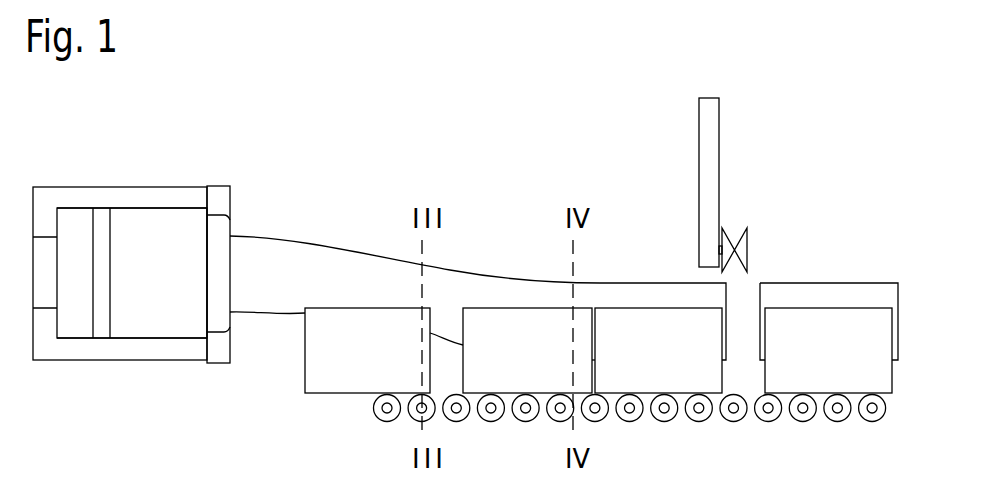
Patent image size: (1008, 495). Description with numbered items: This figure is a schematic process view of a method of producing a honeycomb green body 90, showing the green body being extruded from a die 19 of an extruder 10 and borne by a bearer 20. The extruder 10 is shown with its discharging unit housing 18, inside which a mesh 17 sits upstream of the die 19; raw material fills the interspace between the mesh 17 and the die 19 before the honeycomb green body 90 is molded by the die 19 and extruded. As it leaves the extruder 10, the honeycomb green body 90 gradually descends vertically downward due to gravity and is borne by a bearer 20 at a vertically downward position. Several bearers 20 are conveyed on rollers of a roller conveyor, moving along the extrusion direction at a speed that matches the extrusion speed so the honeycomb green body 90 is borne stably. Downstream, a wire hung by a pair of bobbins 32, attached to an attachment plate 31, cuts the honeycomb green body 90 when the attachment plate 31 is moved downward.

The extruder 10 is at (63, 160).
The mesh 17 is at (110, 223).
The discharging unit housing 18 is at (188, 195).
The die 19 is at (231, 193).
The bearer 20 is at (381, 366).
The attachment plate 31 is at (719, 158).
The bobbins 32 is at (747, 229).
The honeycomb green body 90 is at (622, 290).